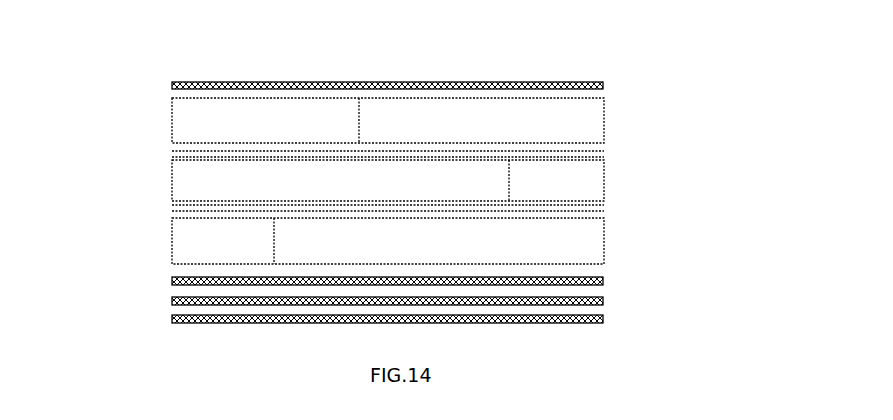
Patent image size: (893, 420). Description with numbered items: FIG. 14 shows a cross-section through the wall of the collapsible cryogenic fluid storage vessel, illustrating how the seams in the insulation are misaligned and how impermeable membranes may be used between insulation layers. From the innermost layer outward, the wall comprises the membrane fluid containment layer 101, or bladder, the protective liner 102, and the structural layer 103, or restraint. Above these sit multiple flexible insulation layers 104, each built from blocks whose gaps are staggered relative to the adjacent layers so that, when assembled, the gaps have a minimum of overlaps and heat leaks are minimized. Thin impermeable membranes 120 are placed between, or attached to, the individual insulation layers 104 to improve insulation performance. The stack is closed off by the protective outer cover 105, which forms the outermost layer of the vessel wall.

The membrane fluid containment layer 101 is at (606, 323).
The protective liner 102 is at (604, 302).
The structural layer 103 is at (604, 282).
The insulation layers 104 is at (605, 235).
The protective outer cover 105 is at (603, 87).
The impermeable membranes 120 is at (172, 154).